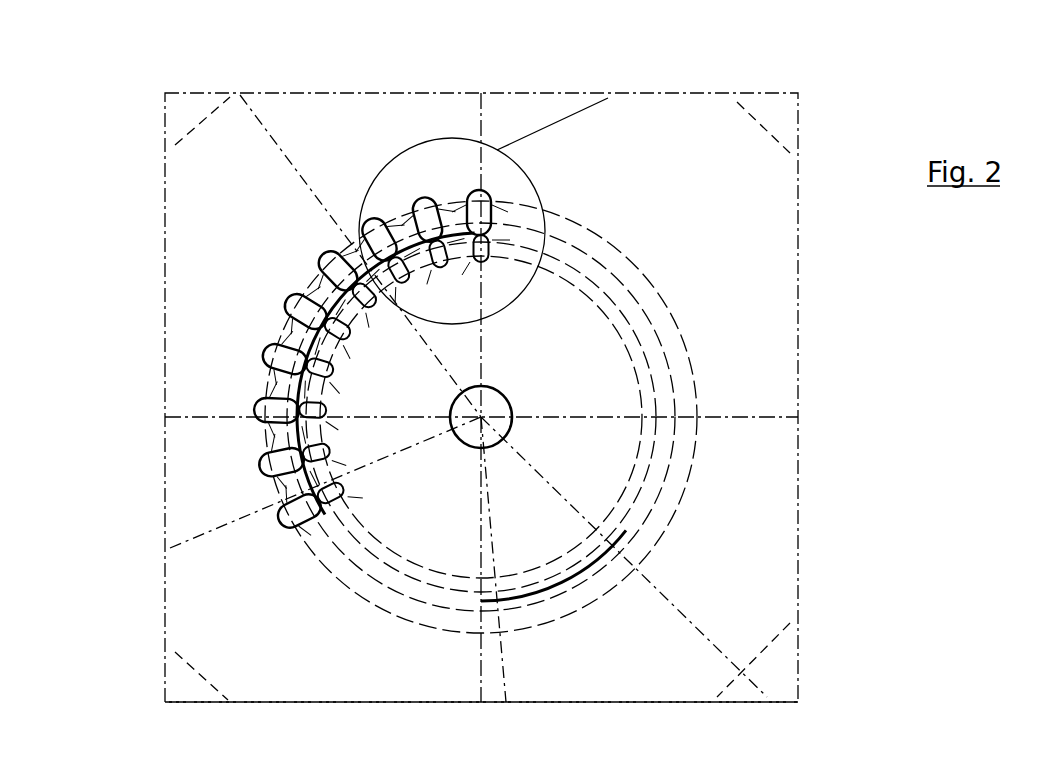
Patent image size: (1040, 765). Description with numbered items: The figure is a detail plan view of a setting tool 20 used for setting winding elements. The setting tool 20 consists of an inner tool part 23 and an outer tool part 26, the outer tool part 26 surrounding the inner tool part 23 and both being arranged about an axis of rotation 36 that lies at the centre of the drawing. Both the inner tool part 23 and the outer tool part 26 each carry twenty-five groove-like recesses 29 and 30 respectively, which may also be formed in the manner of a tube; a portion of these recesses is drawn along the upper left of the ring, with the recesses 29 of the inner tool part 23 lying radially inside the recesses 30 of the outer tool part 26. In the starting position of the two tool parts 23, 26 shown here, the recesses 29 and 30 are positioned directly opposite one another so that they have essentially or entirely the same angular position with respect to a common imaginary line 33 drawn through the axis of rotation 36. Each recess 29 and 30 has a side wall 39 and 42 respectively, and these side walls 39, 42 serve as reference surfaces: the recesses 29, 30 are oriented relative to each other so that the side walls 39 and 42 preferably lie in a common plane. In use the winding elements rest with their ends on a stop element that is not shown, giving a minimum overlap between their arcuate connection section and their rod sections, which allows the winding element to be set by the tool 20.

The setting tool 20 is at (152, 146).
The inner tool part 23 is at (347, 217).
The outer tool part 26 is at (355, 708).
The groove-like recess 29 is at (322, 348).
The groove-like recess 30 is at (250, 340).
The common imaginary line 33 is at (407, 447).
The axis of rotation 36 is at (490, 407).
The side wall 39 is at (307, 485).
The side wall 42 is at (270, 495).